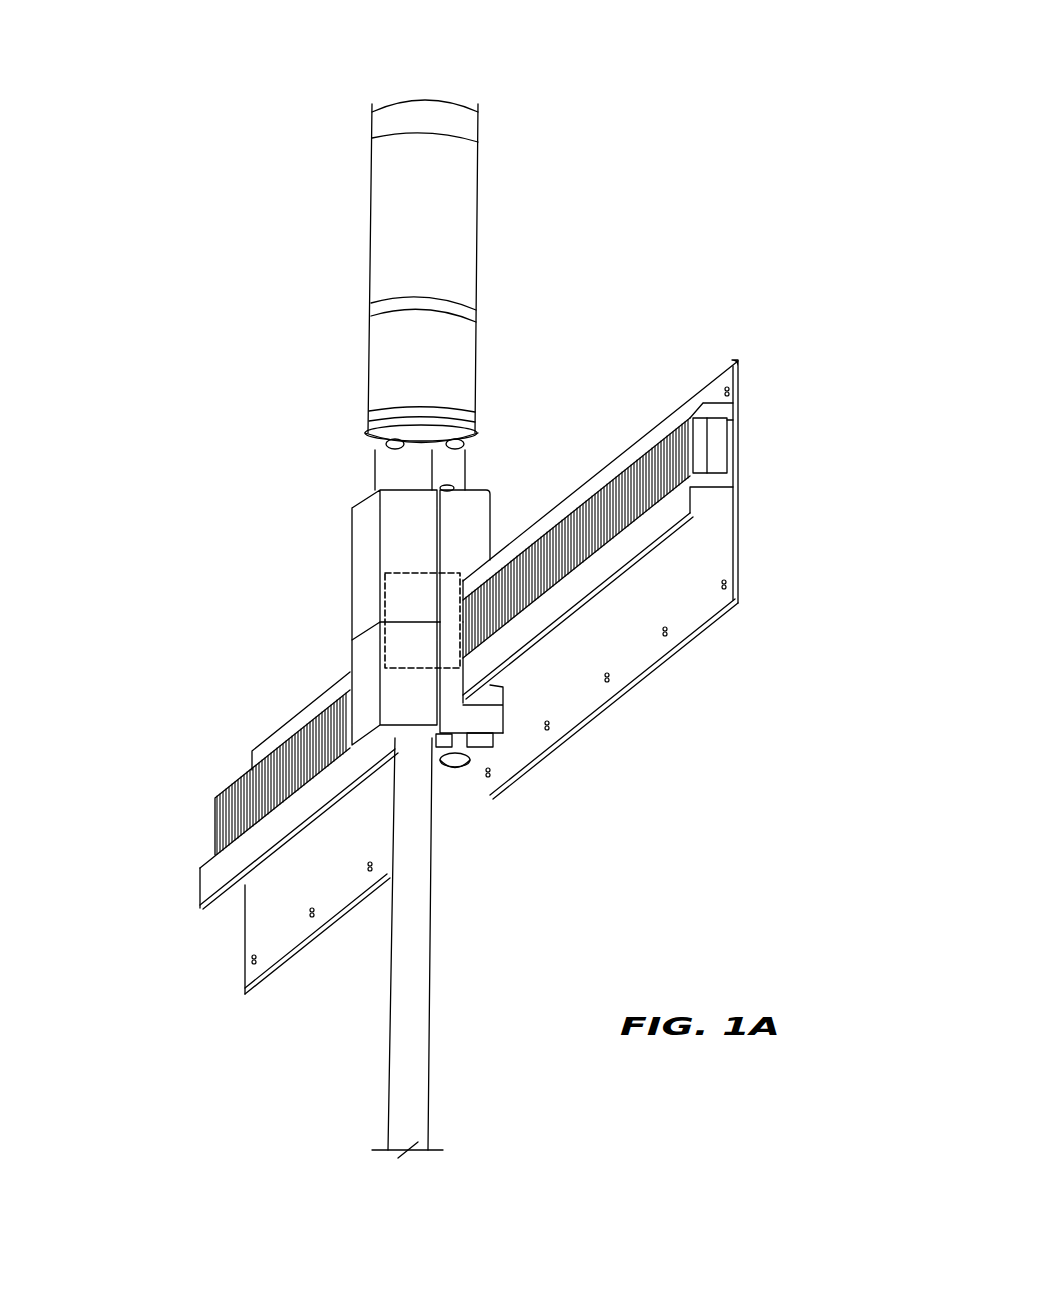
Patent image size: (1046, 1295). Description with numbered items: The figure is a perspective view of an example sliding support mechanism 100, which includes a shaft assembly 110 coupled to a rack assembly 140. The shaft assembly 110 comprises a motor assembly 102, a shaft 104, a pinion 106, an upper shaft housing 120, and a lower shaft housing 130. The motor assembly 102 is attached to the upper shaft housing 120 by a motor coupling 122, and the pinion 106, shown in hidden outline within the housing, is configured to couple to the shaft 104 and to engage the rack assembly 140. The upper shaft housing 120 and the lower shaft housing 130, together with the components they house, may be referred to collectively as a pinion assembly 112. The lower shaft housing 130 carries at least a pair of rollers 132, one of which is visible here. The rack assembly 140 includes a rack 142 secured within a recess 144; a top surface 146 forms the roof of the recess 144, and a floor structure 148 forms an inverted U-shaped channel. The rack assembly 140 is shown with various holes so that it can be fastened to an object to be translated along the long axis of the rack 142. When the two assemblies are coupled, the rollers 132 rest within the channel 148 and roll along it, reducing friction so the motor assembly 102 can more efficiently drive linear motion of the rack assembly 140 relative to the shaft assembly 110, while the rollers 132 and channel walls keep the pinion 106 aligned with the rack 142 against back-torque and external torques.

The sliding support mechanism 100 is at (814, 78).
The motor assembly 102 is at (330, 257).
The shaft 104 is at (408, 950).
The pinion 106 is at (415, 602).
The shaft assembly 110 is at (158, 452).
The pinion assembly 112 is at (326, 631).
The upper shaft housing 120 is at (422, 561).
The motor coupling 122 is at (422, 472).
The lower shaft housing 130 is at (422, 697).
The rollers 132 is at (497, 687).
The rack assembly 140 is at (618, 649).
The rack 142 is at (672, 437).
The recess 144 is at (719, 445).
The top surface 146 is at (695, 396).
The floor structure 148 is at (722, 516).